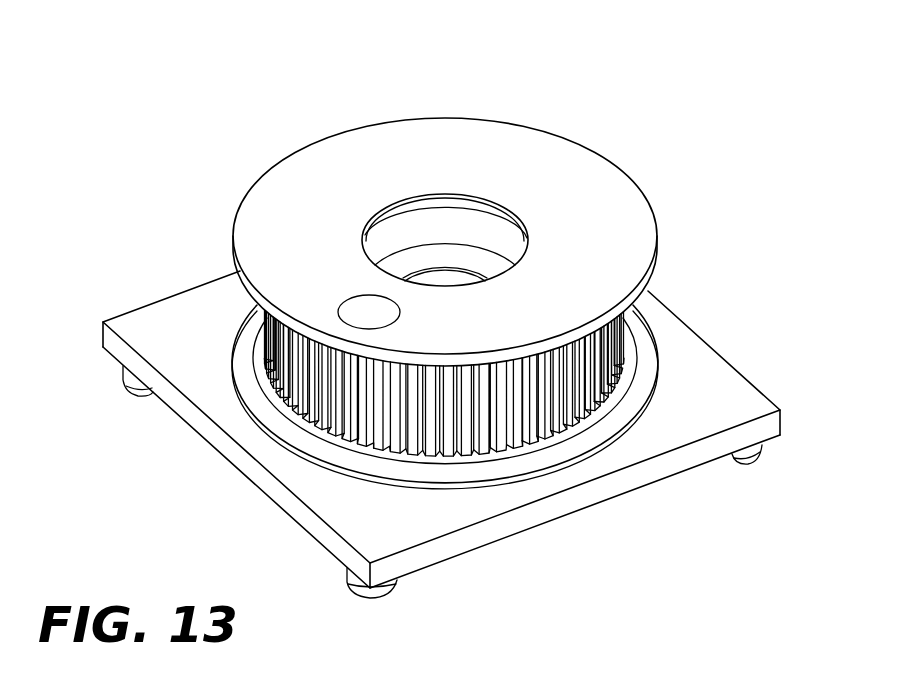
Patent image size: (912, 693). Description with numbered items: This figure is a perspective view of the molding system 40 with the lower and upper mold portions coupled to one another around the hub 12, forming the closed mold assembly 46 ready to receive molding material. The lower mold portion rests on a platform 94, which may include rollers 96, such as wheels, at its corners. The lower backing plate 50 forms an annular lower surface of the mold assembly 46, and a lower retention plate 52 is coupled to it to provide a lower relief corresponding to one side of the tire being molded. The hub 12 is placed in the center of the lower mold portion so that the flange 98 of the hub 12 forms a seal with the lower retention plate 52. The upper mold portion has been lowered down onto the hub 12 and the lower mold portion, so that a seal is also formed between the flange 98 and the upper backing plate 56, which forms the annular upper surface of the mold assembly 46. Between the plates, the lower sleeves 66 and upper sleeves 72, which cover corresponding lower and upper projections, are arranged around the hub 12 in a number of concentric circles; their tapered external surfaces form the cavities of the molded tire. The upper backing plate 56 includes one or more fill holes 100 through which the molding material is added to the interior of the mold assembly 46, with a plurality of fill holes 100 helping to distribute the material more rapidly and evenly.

The hub 12 is at (461, 236).
The system 40 is at (248, 90).
The mold assembly 46 is at (662, 110).
The lower backing plate 50 is at (652, 348).
The lower retention plate 52 is at (600, 400).
The upper backing plate 56 is at (512, 130).
The lower sleeves 66 is at (540, 427).
The upper sleeves 72 is at (593, 356).
The platform 94 is at (781, 423).
The rollers 96 is at (744, 462).
The flange 98 is at (416, 208).
The fill holes 100 is at (382, 312).